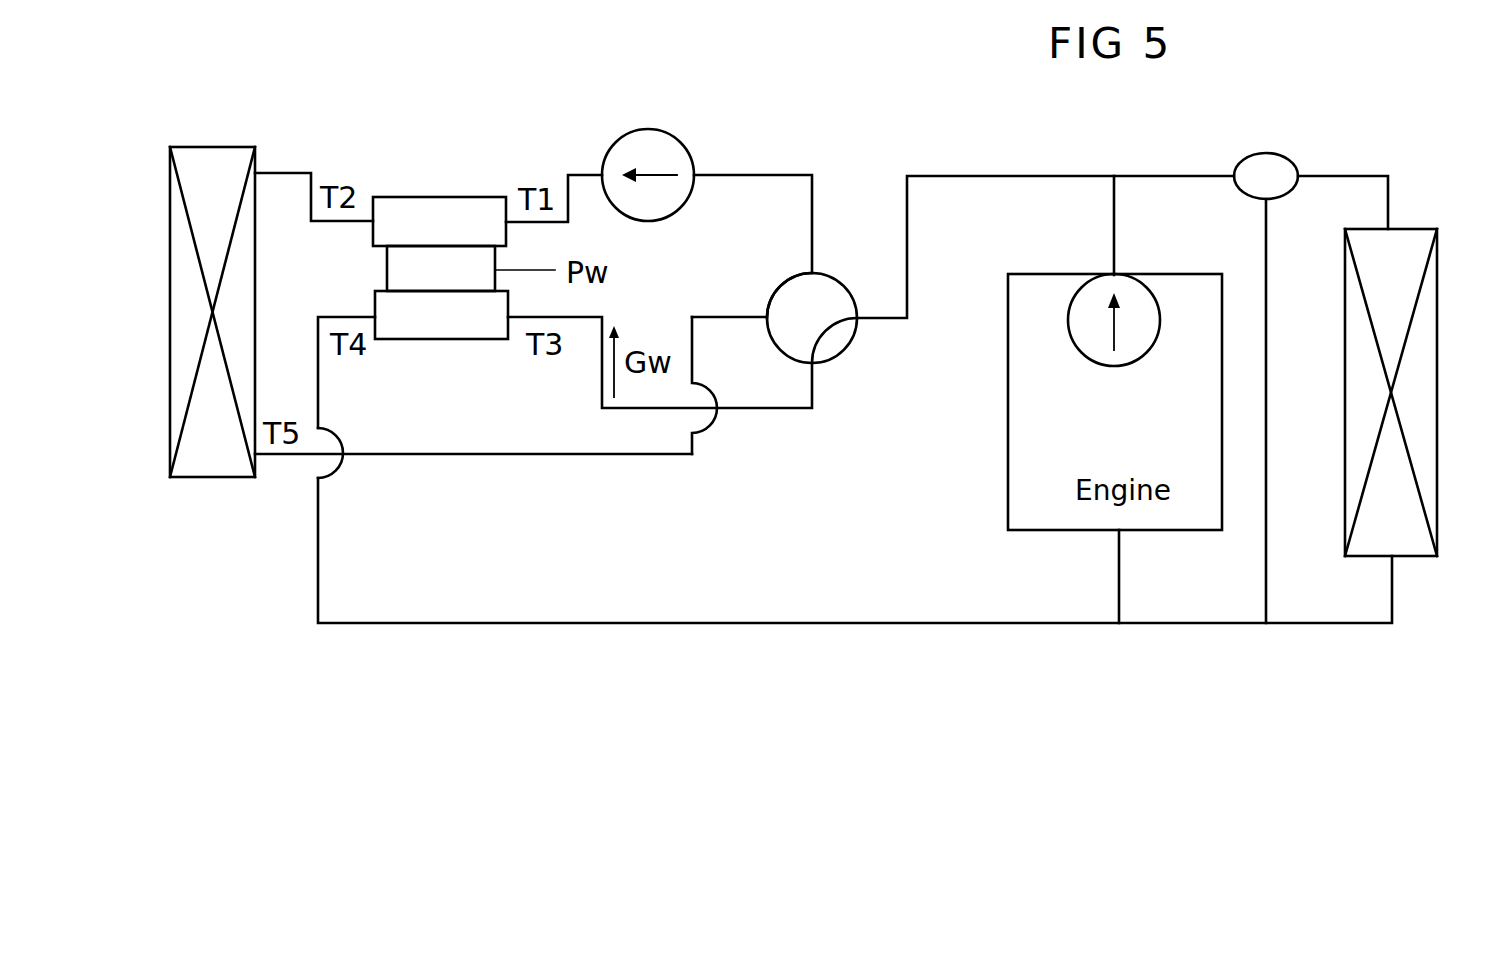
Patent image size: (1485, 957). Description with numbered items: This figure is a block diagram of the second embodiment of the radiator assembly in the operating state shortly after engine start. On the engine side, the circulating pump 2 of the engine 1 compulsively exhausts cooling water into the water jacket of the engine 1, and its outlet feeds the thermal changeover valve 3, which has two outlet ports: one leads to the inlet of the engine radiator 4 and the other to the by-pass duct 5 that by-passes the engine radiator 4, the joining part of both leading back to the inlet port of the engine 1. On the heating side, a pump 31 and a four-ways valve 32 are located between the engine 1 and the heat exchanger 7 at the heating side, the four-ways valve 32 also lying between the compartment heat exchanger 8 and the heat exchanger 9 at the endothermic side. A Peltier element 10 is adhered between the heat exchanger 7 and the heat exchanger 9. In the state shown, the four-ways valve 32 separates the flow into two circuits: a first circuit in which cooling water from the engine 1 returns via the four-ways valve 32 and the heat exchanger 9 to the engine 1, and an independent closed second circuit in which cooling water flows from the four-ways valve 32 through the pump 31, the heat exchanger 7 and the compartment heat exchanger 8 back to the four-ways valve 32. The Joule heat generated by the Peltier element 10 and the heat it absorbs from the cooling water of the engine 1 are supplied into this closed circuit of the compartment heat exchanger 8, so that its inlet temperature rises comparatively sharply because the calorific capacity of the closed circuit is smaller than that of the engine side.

The engine 1 is at (1040, 310).
The circulating pump 2 is at (1137, 310).
The thermal changeover valve 3 is at (1272, 170).
The engine radiator 4 is at (1415, 228).
The by-pass duct 5 is at (1268, 595).
The heat exchanger 7 is at (443, 197).
The compartment heat exchanger 8 is at (200, 147).
The heat exchanger 9 is at (443, 339).
The Peltier element 10 is at (387, 268).
The pump 31 is at (690, 145).
The four-ways valve 32 is at (785, 290).